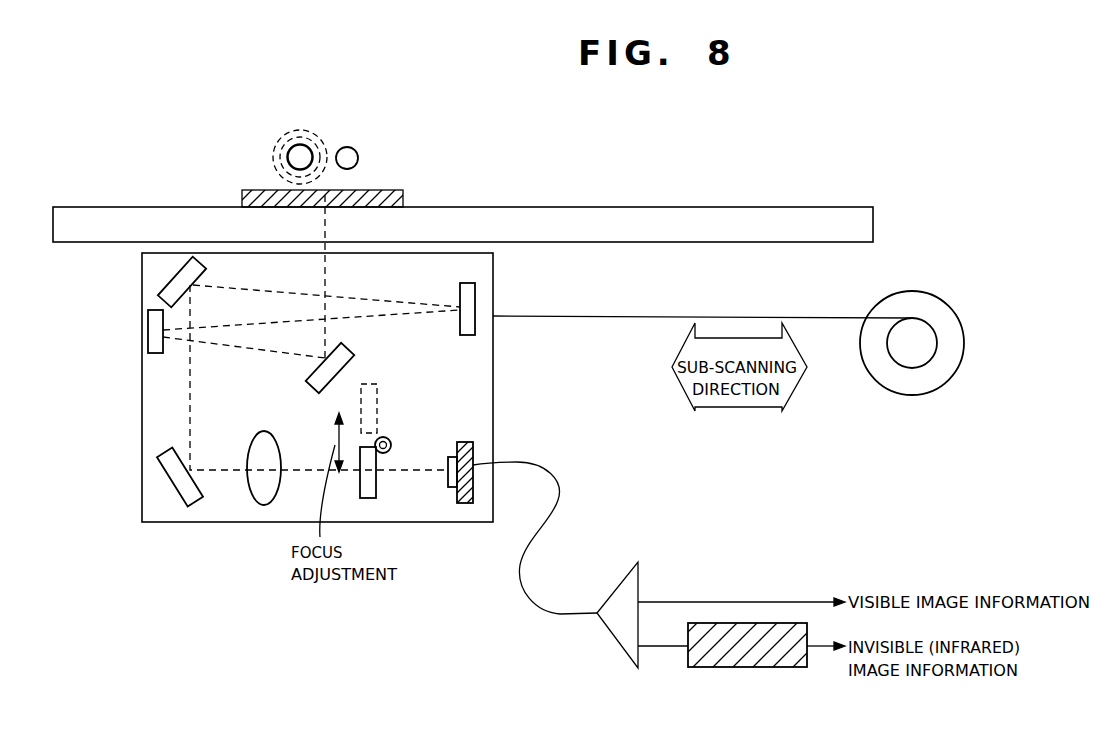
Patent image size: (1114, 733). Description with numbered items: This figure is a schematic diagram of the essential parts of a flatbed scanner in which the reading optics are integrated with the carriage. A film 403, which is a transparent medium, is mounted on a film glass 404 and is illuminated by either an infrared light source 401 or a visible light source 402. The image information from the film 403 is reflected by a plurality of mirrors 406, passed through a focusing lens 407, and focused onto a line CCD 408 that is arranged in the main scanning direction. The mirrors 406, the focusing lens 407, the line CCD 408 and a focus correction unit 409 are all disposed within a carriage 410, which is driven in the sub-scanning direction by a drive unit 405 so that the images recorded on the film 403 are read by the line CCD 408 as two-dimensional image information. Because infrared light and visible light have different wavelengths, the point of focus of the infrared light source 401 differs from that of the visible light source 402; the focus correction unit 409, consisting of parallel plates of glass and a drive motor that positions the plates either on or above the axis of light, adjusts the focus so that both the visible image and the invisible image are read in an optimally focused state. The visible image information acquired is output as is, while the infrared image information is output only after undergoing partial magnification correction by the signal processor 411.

The infrared light source 401 is at (298, 133).
The visible light source 402 is at (355, 148).
The film 403 is at (390, 189).
The film glass 404 is at (503, 207).
The drive unit 405 is at (964, 343).
The mirrors 406 is at (163, 455).
The focusing lens 407 is at (266, 430).
The line CCD 408 is at (452, 456).
The focus correction unit 409 is at (377, 482).
The carriage 410 is at (206, 523).
The signal processor 411 is at (750, 668).